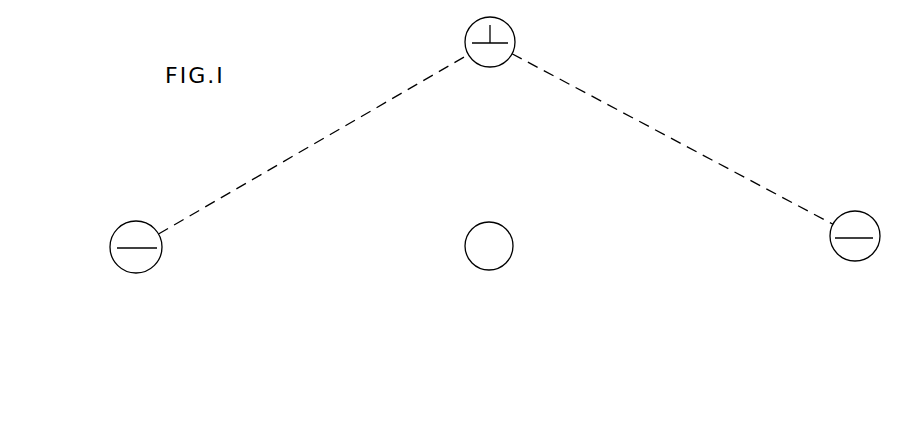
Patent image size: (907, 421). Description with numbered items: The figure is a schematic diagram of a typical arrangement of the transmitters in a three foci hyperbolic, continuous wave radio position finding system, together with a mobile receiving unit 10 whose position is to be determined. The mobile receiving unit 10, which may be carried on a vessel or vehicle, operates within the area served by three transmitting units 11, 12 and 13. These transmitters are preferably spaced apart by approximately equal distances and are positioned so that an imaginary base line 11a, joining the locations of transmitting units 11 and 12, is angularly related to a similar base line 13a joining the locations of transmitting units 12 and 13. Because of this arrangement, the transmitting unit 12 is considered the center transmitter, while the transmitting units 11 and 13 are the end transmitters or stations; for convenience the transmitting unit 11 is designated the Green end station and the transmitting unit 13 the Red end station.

The mobile receiving unit 10 is at (512, 240).
The transmitting unit 11 is at (113, 235).
The base line 11a is at (325, 137).
The transmitting unit 12 is at (508, 25).
The transmitting unit 13 is at (876, 222).
The base line 13a is at (670, 137).